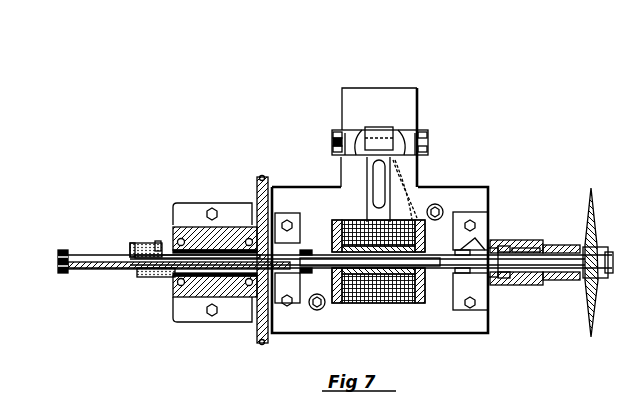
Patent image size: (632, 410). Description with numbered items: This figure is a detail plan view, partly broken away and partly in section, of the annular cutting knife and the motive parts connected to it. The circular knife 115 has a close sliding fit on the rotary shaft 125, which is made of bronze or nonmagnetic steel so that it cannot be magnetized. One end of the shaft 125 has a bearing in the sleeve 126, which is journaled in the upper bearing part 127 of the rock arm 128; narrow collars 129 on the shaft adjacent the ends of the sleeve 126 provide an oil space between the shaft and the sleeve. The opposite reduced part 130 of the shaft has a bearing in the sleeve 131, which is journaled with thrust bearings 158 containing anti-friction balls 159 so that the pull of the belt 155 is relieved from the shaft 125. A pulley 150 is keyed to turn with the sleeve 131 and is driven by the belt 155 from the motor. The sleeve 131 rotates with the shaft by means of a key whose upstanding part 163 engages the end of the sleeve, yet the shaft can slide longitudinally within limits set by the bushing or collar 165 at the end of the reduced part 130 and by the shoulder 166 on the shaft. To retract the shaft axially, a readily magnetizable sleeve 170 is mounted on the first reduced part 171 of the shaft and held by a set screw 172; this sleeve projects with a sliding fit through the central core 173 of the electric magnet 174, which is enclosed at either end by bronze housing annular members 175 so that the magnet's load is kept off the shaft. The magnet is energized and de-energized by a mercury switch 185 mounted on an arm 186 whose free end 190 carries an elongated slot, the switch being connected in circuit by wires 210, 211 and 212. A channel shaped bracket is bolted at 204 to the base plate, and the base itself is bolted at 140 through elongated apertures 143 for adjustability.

The circular knife 115 is at (592, 200).
The rotary shaft 125 is at (485, 258).
The sleeve 126 is at (557, 244).
The upper bearing part 127 is at (520, 286).
The rock arm 128 is at (606, 278).
The narrow collars 129 is at (515, 240).
The reduced part 130 is at (200, 297).
The sleeve 131 is at (148, 277).
The bolts 140 is at (441, 206).
The elongated apertures 143 is at (432, 206).
The pulley 150 is at (257, 180).
The belt 155 is at (262, 177).
The thrust bearings 158 is at (238, 225).
The anti-friction balls 159 is at (245, 297).
The upstanding part 163 is at (133, 243).
The bushing or collar 165 is at (60, 250).
The shoulder 166 is at (380, 264).
The sleeve 170 is at (335, 331).
The first reduced part 171 is at (400, 303).
The set screw 172 is at (455, 212).
The central core 173 is at (380, 303).
The electric magnet 174 is at (348, 221).
The housing annular members 175 is at (303, 238).
The mercury switch 185 is at (368, 172).
The arm 186 is at (368, 160).
The free end 190 is at (378, 130).
The bolts 204 is at (420, 135).
The wire 210 is at (420, 176).
The wire 211 is at (428, 187).
The wire 212 is at (418, 192).